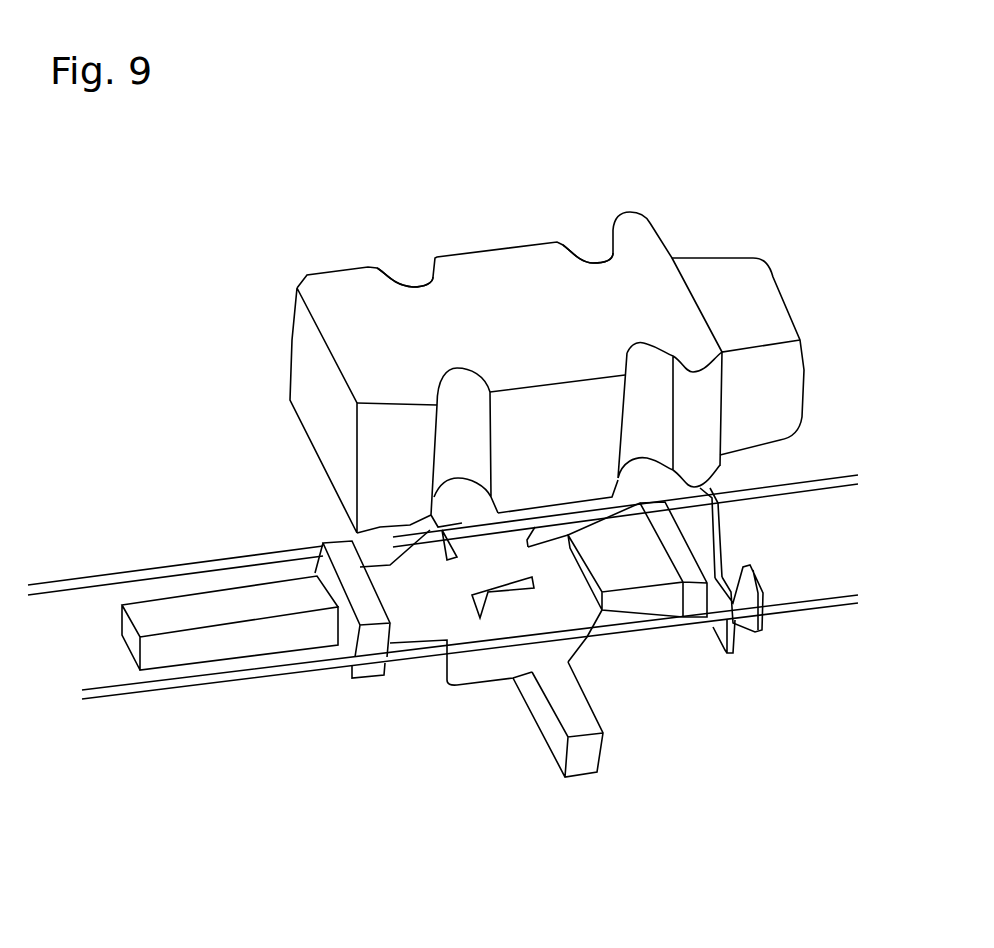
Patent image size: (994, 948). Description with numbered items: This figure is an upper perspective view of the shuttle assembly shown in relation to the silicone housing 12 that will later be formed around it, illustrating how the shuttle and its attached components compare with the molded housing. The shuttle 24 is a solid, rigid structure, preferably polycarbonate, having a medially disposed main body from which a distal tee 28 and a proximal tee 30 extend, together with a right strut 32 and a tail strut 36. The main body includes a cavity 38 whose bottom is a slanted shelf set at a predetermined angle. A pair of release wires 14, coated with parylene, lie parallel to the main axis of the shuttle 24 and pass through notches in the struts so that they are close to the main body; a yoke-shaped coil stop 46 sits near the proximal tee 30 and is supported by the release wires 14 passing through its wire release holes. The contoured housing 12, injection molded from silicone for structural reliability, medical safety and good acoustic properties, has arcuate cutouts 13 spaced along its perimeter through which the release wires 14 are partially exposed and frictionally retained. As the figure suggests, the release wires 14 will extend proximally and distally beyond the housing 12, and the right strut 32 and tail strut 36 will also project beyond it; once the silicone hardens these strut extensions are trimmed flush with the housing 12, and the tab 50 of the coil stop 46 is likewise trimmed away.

The housing 12 is at (333, 273).
The arcuate cutouts 13 is at (600, 258).
The release wires 14 is at (75, 577).
The shuttle 24 is at (481, 726).
The distal tee 28 is at (363, 667).
The proximal tee 30 is at (703, 607).
The right strut 32 is at (588, 757).
The tail strut 36 is at (243, 642).
The cavity 38 is at (480, 606).
The coil stop 46 is at (758, 588).
The tab 50 is at (735, 642).